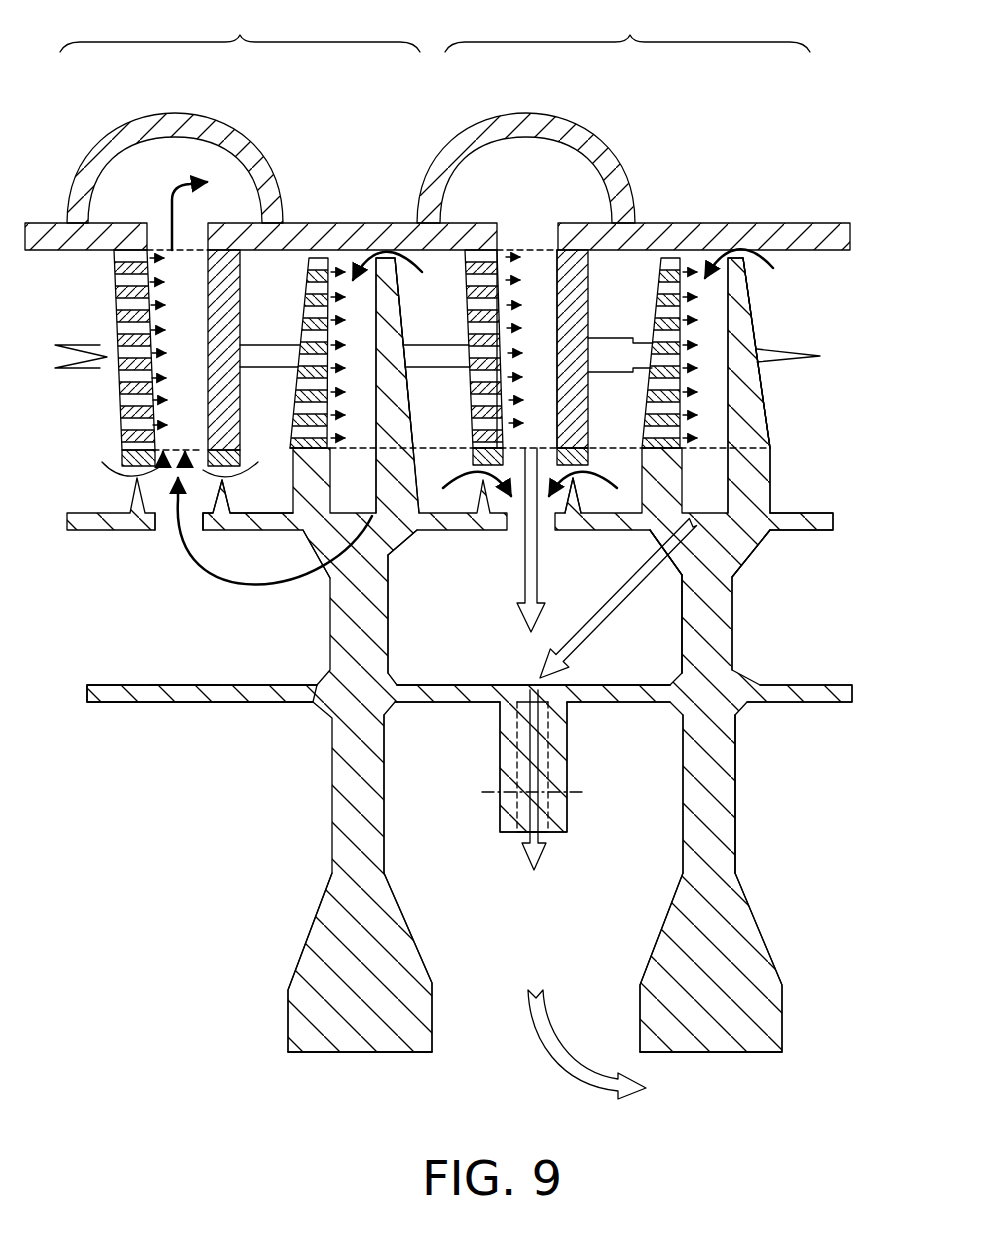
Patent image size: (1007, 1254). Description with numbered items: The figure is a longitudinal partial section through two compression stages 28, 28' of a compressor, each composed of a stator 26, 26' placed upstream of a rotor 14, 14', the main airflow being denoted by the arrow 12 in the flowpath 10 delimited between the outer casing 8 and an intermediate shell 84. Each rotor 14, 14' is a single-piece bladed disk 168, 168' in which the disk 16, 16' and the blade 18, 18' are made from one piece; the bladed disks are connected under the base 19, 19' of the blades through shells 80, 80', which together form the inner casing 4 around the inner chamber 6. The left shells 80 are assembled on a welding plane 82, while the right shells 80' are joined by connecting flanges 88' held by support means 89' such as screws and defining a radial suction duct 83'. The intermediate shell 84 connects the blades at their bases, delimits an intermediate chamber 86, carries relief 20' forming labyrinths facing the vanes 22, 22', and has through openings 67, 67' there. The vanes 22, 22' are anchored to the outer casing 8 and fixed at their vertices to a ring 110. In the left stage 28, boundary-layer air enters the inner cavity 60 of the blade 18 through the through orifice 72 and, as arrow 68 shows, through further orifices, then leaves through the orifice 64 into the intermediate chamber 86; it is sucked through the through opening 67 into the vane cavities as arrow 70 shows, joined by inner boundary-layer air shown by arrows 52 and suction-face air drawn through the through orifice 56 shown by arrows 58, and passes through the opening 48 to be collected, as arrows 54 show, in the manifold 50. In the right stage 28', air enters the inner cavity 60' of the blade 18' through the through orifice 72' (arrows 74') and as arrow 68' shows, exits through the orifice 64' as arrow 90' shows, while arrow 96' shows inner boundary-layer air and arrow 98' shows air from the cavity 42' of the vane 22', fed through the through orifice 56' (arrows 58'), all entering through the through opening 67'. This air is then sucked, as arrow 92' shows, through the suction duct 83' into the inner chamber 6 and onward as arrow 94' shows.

The inner casing 4 is at (796, 702).
The inner chamber 6 is at (252, 896).
The outer casing 8 is at (824, 232).
The flowpath 10 is at (853, 454).
The main airflow arrow 12 is at (812, 350).
The rotor 14 is at (469, 655).
The rotor 14' is at (744, 701).
The disk 16 is at (396, 962).
The disk 16' is at (757, 962).
The blade 18 is at (423, 353).
The blade 18' is at (776, 353).
The base 19 is at (416, 563).
The base 19' is at (770, 564).
The relief forming labyrinths 20' is at (589, 521).
The vane 22 is at (254, 372).
The vane 22' is at (605, 357).
The stator 26 is at (71, 336).
The stator 26' is at (627, 299).
The compression stage 28 is at (240, 29).
The compression stage 28' is at (627, 29).
The cavity 42' is at (571, 349).
The opening 48 is at (219, 240).
The manifold 50 is at (223, 131).
The arrows 52 is at (128, 478).
The arrows 54 is at (168, 198).
The through orifice 56 is at (110, 350).
The through orifice 56' is at (459, 357).
The arrows 58 is at (177, 362).
The arrows 58' is at (531, 303).
The inner cavity 60 is at (407, 385).
The inner cavity 60' is at (762, 385).
The orifice 64 is at (299, 574).
The orifice 64' is at (655, 579).
The through opening 67 is at (179, 556).
The through opening 67' is at (530, 534).
The arrow 68 is at (387, 223).
The arrow 68' is at (739, 222).
The arrow 70 is at (240, 578).
The through orifice 72 is at (294, 354).
The through orifice 72' is at (647, 354).
The arrows 74' is at (781, 353).
The shell 80 is at (202, 719).
The shell 80' is at (530, 720).
The welding plane 82 is at (180, 700).
The suction duct 83' is at (549, 776).
The intermediate shell 84 is at (808, 530).
The intermediate chamber 86 is at (290, 659).
The connecting flange 88' is at (532, 767).
The support means 89' is at (583, 774).
The arrow 90' is at (618, 599).
The arrow 92' is at (560, 793).
The arrow 94' is at (566, 1044).
The arrow 96' is at (530, 453).
The arrow 98' is at (563, 540).
The ring 110 is at (122, 458).
The single-piece bladed disk 168 is at (422, 794).
The single-piece bladed disk 168' is at (779, 794).